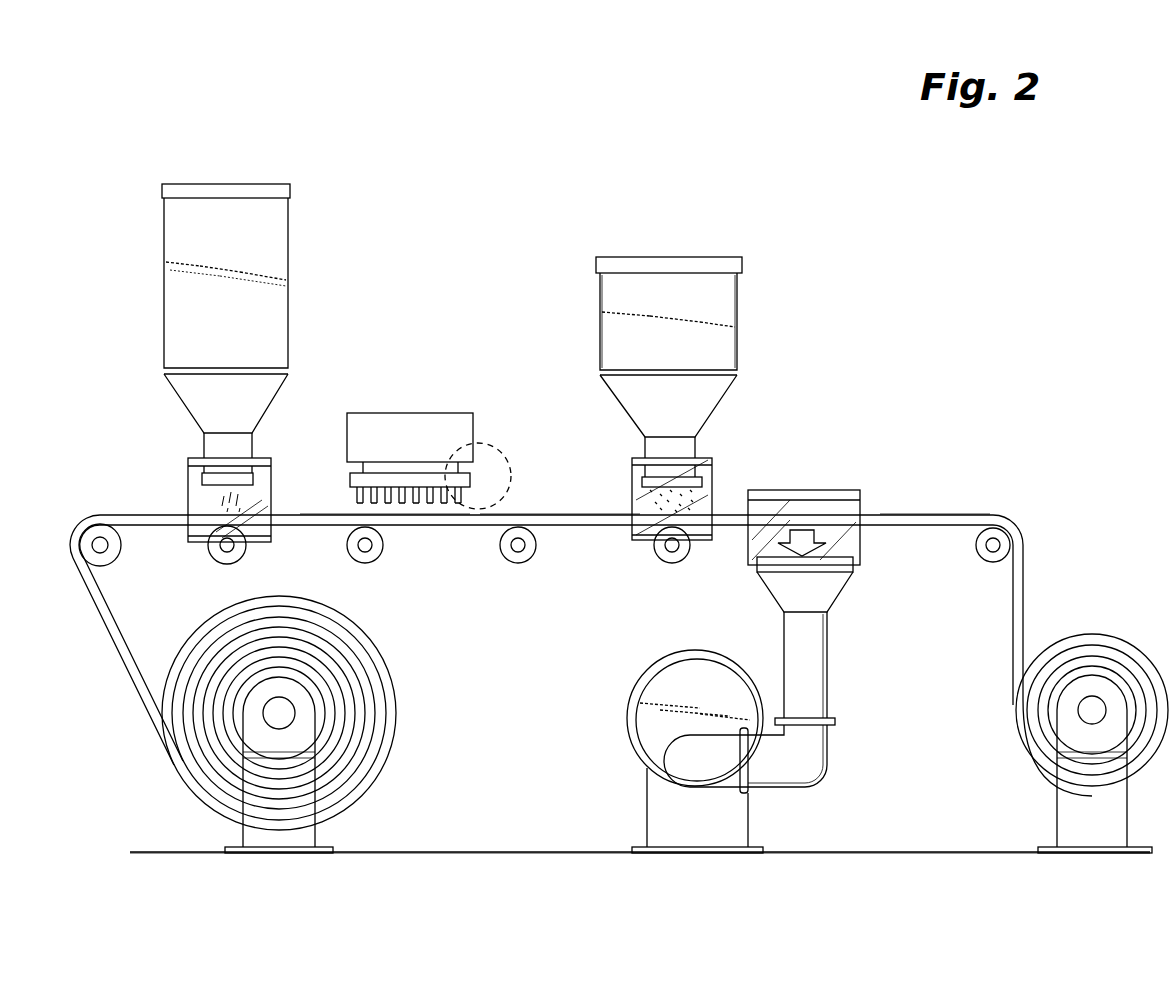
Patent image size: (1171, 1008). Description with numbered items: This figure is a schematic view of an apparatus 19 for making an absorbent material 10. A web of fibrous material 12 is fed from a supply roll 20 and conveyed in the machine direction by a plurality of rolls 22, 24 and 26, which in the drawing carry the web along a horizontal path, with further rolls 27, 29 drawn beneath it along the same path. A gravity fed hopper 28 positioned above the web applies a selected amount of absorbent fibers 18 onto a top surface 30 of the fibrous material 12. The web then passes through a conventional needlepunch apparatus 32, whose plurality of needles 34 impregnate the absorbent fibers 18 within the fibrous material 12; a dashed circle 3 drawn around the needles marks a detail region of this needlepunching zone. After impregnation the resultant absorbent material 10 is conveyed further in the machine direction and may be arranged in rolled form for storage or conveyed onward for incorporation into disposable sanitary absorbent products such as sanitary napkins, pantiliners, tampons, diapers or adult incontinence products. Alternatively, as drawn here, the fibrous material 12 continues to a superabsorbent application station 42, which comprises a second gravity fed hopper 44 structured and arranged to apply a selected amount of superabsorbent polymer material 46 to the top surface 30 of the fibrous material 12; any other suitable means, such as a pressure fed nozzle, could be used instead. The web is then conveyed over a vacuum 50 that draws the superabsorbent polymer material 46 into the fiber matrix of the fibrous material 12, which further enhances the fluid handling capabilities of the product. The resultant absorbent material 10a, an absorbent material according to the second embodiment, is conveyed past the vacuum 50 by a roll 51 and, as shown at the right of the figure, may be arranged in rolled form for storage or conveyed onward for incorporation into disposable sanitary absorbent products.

The detail region shown in FIG. 3 is at (487, 450).
The absorbent material 10 is at (563, 508).
The absorbent material 10a is at (962, 508).
The web of fibrous material 12 is at (138, 515).
The absorbent fibers 18 is at (205, 505).
The apparatus 19 is at (917, 333).
The supply roll 20 is at (402, 672).
The roll 22 is at (110, 553).
The roll 24 is at (228, 564).
The roll 26 is at (364, 563).
The roller 27 is at (515, 563).
The gravity fed hopper 28 is at (303, 242).
The roller 29 is at (662, 550).
The top surface 30 is at (345, 513).
The needlepunch apparatus 32 is at (357, 403).
The needles 34 is at (414, 503).
The superabsorbent application station 42 is at (656, 252).
The gravity fed hopper 44 is at (730, 345).
The superabsorbent polymer material 46 is at (693, 502).
The vacuum 50 is at (638, 660).
The roll 51 is at (988, 560).